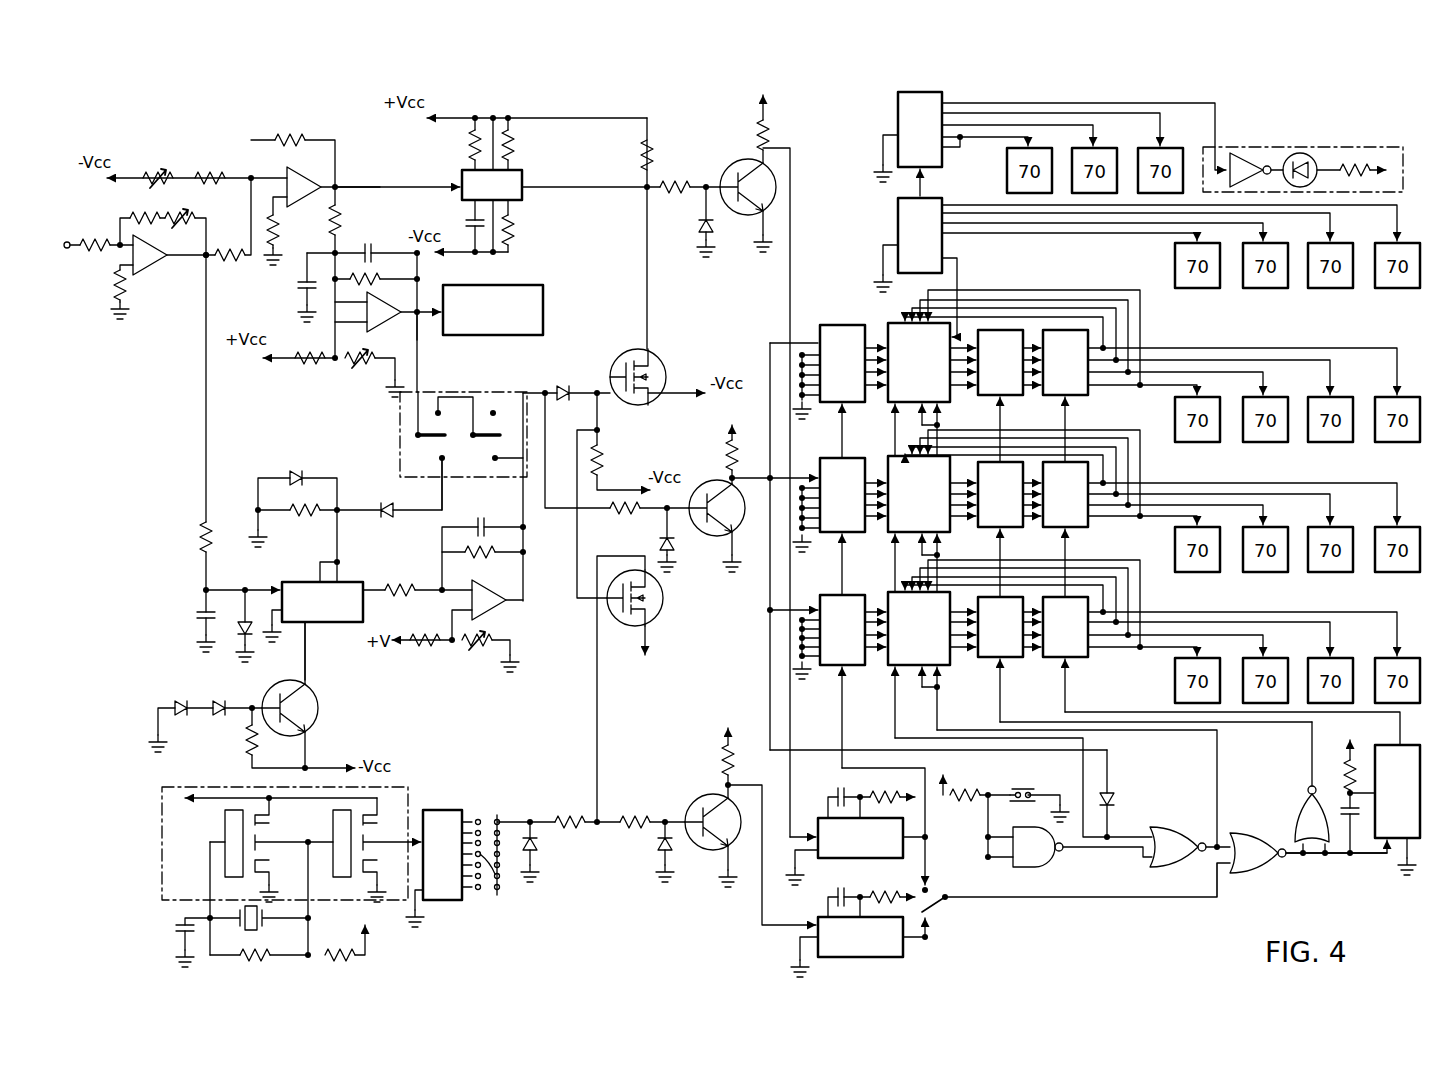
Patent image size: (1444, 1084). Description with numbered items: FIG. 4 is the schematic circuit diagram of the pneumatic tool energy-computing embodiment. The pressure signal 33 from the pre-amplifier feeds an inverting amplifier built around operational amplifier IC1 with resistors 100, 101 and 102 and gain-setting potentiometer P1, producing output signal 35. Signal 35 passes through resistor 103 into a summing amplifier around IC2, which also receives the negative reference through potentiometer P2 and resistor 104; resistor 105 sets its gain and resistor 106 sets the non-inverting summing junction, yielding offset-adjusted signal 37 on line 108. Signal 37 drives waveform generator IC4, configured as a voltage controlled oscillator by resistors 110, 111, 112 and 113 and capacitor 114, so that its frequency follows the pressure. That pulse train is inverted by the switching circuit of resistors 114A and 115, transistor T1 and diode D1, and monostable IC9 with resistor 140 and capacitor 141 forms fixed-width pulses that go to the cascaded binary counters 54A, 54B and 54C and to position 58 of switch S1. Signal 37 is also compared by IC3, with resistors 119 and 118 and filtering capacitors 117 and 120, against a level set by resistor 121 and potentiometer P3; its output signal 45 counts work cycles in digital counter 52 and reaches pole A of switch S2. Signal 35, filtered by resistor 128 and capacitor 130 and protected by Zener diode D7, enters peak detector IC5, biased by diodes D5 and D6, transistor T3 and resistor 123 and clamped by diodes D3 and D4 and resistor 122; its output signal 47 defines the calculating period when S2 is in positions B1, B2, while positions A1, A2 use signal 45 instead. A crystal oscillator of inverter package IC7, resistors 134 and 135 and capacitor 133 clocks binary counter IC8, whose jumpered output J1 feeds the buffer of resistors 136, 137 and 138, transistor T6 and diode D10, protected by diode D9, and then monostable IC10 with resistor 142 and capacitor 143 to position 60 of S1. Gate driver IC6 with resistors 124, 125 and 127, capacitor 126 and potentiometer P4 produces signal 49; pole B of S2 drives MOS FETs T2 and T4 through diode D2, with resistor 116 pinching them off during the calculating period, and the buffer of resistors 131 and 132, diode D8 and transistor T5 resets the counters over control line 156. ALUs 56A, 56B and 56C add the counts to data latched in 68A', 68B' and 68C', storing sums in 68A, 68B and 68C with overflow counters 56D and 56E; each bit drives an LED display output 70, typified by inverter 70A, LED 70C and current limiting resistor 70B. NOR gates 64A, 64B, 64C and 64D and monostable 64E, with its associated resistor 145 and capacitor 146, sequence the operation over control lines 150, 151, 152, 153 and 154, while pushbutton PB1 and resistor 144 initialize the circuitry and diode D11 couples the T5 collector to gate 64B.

The pressure signal 33 is at (66, 238).
The output signal 35 is at (203, 254).
The output signal 37 is at (339, 186).
The signal 45 is at (420, 319).
The signal 47 is at (383, 589).
The signal 49 is at (523, 530).
The digital counter 52 is at (543, 310).
The position of switch S1 58 is at (928, 885).
The position of switch S1 60 is at (928, 925).
The indicator lamps 70 is at (1403, 172).
The inverter 70A is at (1245, 150).
The current limiting resistor 70B is at (1355, 163).
The LED 70C is at (1301, 153).
The resistor 100 is at (95, 252).
The resistor 101 is at (144, 216).
The resistor 102 is at (116, 298).
The resistor 103 is at (223, 262).
The resistor 104 is at (202, 176).
The resistor 105 is at (289, 138).
The resistor 106 is at (276, 230).
The line 108 is at (380, 187).
The resistor 110 is at (471, 142).
The resistor 111 is at (513, 141).
The resistor 112 is at (643, 153).
The resistor 113 is at (517, 231).
The capacitor 114 is at (470, 218).
The resistor 114A is at (683, 199).
The resistor 115 is at (750, 126).
The resistor 116 is at (601, 466).
The capacitor 117 is at (369, 247).
The resistor 118 is at (380, 276).
The resistor 119 is at (340, 224).
The capacitor 120 is at (303, 284).
The resistor 121 is at (300, 355).
The resistor 122 is at (297, 516).
The resistor 123 is at (250, 741).
The resistor 124 is at (397, 594).
The resistor 125 is at (488, 558).
The capacitor 126 is at (482, 526).
The resistor 127 is at (417, 650).
The resistor 128 is at (204, 534).
The capacitor 130 is at (202, 609).
The resistor 131 is at (614, 513).
The resistor 132 is at (727, 444).
The capacitor 133 is at (178, 931).
The resistor 134 is at (258, 954).
The resistor 135 is at (350, 953).
The resistor 136 is at (555, 818).
The resistor 137 is at (622, 818).
The resistor 138 is at (727, 750).
The resistor 140 is at (878, 795).
The capacitor 141 is at (837, 787).
The resistor 142 is at (875, 897).
The capacitor 143 is at (830, 897).
The resistor 144 is at (976, 789).
The resistor 145 is at (1354, 760).
The capacitor 146 is at (1351, 830).
The control line 150 is at (1083, 778).
The mode control line 151 is at (1217, 773).
The latch enable 152 is at (1312, 742).
The signal line 153 is at (1347, 855).
The latch enable 154 is at (1400, 735).
The control line 156 is at (770, 659).
The potentiometer P1 is at (183, 232).
The potentiometer P2 is at (118, 176).
The potentiometer P3 is at (371, 368).
The potentiometer P4 is at (478, 650).
The operational amplifier IC1 is at (147, 268).
The operational amplifier IC2 is at (311, 182).
The operational amplifier IC3 is at (388, 315).
The integrated circuit IC4 is at (492, 185).
The peak detector IC5 is at (318, 619).
The operational amplifier IC6 is at (497, 616).
The complementary metal oxide semiconductor inverter package IC7 is at (162, 900).
The binary counter IC8 is at (443, 868).
The monostable multivibrator IC9 is at (857, 851).
The monostable multivibrator IC10 is at (859, 947).
The transistor T1 is at (722, 161).
The MOS FET T2 is at (632, 353).
The transistor T3 is at (320, 710).
The MOS FET T4 is at (674, 592).
The transistor T5 is at (717, 483).
The transistor T6 is at (718, 860).
The diode D1 is at (699, 231).
The diode D2 is at (564, 392).
The diode D3 is at (291, 473).
The diode D4 is at (390, 505).
The diode D5 is at (181, 701).
The diode D6 is at (221, 700).
The Zener diode D7 is at (252, 638).
The diode D8 is at (678, 541).
The diode D9 is at (535, 848).
The diode D10 is at (658, 853).
The diode D11 is at (1114, 808).
The single-pole-double-throw switch S1 is at (950, 905).
The DPDT switch S2 is at (487, 393).
The jumper J1 is at (505, 866).
The pushbutton PB1 is at (1025, 790).
The pole of switch S2 A is at (423, 440).
The pole position of switch S2 B is at (477, 440).
The position of switch S2 A1 is at (454, 416).
The position of switch S2 A2 is at (505, 415).
The position of switch S2 B1 is at (431, 482).
The position of switch S2 B2 is at (496, 464).
The binary counter 54A is at (859, 716).
The binary counter 54B is at (829, 526).
The binary counter 54C is at (829, 391).
The arithmetic logic unit 56A is at (907, 661).
The arithmetic logic unit 56B is at (907, 524).
The arithmetic logic unit 56C is at (907, 389).
The counter 56D is at (1135, 253).
The counter 56E is at (1050, 137).
The latching memory 68A is at (986, 659).
The latching memory 68B is at (986, 529).
The latching memory 68C is at (986, 396).
The latching memory 68A' is at (1151, 636).
The latching memory 68B' is at (1151, 513).
The latching memory 68C' is at (1151, 376).
The NOR gate 64A is at (1038, 865).
The NOR gate 64B is at (1178, 865).
The NOR gate 64C is at (1240, 840).
The NOR gate 64D is at (1307, 788).
The monostable multivibrator 64E is at (1397, 810).